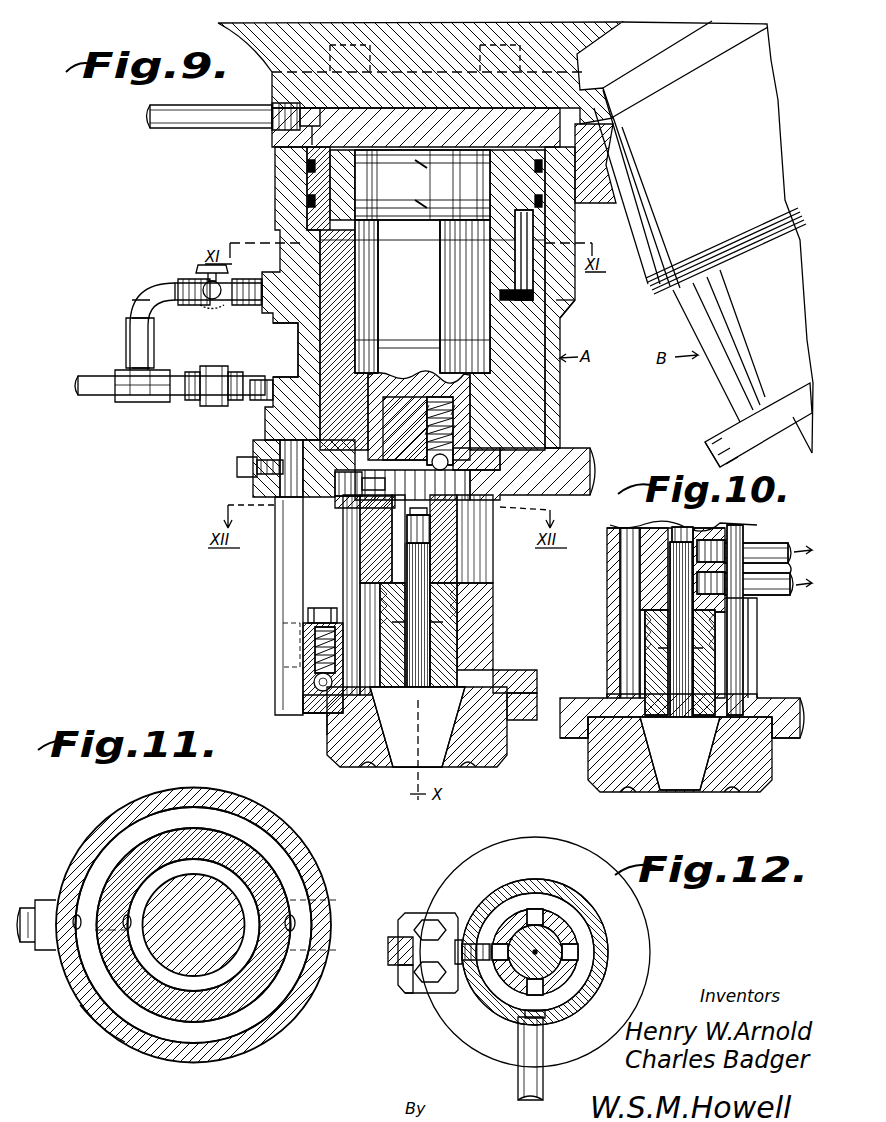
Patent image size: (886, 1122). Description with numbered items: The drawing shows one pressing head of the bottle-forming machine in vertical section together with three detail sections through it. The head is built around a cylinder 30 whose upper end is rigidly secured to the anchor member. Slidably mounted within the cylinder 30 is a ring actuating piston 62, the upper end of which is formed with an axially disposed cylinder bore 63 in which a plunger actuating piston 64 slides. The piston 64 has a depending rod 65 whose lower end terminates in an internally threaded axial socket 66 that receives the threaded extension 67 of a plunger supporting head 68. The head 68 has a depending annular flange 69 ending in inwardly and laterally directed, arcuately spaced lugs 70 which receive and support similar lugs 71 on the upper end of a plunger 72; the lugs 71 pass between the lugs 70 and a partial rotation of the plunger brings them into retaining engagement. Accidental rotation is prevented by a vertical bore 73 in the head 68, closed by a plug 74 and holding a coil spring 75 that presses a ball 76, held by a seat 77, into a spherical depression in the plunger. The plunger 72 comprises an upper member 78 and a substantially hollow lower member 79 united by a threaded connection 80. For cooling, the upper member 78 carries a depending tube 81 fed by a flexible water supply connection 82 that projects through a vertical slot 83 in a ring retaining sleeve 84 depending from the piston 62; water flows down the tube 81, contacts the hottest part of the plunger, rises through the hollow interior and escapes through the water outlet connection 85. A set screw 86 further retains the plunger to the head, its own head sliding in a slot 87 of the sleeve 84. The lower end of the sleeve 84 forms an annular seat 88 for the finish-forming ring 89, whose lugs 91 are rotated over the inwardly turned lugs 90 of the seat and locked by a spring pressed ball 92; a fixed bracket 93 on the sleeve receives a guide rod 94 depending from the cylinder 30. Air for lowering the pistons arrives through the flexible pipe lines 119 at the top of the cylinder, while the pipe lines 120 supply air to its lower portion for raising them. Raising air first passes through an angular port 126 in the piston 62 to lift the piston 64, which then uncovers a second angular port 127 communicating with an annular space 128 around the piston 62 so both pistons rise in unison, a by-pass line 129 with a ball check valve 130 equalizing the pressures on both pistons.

In FIG. 9, the cylinder 30 is at (276, 170).
In FIG. 11, the cylinder 30 is at (306, 857).
In FIG. 9, the flexible pipe lines 119 is at (222, 130).
In FIG. 9, the ring actuating piston 62 is at (307, 190).
In FIG. 11, the ring actuating piston 62 is at (296, 908).
In FIG. 9, the cylinder bore 63 is at (364, 280).
In FIG. 11, the cylinder bore 63 is at (250, 900).
In FIG. 9, the plunger actuating piston 64 is at (424, 192).
In FIG. 9, the depending rod 65 is at (412, 305).
In FIG. 11, the depending rod 65 is at (245, 944).
In FIG. 9, the internally threaded axial socket 66 is at (395, 395).
In FIG. 9, the threaded extension 67 is at (420, 410).
In FIG. 9, the plunger supporting head 68 is at (350, 492).
In FIG. 12, the plunger supporting head 68 is at (575, 918).
In FIG. 9, the depending annular flange 69 is at (365, 493).
In FIG. 12, the depending annular flange 69 is at (592, 938).
In FIG. 9, the lugs 70 is at (372, 505).
In FIG. 12, the lugs 70 is at (580, 950).
In FIG. 9, the lugs 71 is at (475, 484).
In FIG. 12, the lugs 71 is at (565, 965).
In FIG. 9, the plunger 72 is at (460, 562).
In FIG. 10, the plunger 72 is at (640, 578).
In FIG. 9, the vertical bore 73 is at (470, 446).
In FIG. 9, the plug 74 is at (450, 404).
In FIG. 9, the coil spring 75 is at (455, 420).
In FIG. 9, the ball 76 is at (490, 456).
In FIG. 9, the seat 77 is at (470, 503).
In FIG. 9, the upper member 78 is at (452, 540).
In FIG. 10, the upper member 78 is at (640, 560).
In FIG. 9, the lower member 79 is at (455, 640).
In FIG. 10, the lower member 79 is at (650, 680).
In FIG. 9, the threaded connection 80 is at (455, 606).
In FIG. 10, the threaded connection 80 is at (655, 632).
In FIG. 9, the depending tube 81 is at (425, 675).
In FIG. 10, the depending tube 81 is at (693, 663).
In FIG. 10, the flexible water supply connection 82 is at (770, 542).
In FIG. 12, the flexible water supply connection 82 is at (545, 1048).
In FIG. 10, the vertical slot 83 is at (752, 620).
In FIG. 12, the vertical slot 83 is at (572, 1000).
In FIG. 9, the ring retaining sleeve 84 is at (530, 680).
In FIG. 10, the ring retaining sleeve 84 is at (612, 614).
In FIG. 12, the ring retaining sleeve 84 is at (592, 978).
In FIG. 10, the water outlet connection 85 is at (780, 598).
In FIG. 9, the set screw 86 is at (312, 493).
In FIG. 12, the set screw 86 is at (455, 938).
In FIG. 9, the slot 87 is at (348, 571).
In FIG. 12, the slot 87 is at (452, 975).
In FIG. 9, the annular seat 88 is at (524, 721).
In FIG. 10, the annular seat 88 is at (580, 740).
In FIG. 9, the finish-forming ring 89 is at (335, 756).
In FIG. 10, the finish-forming ring 89 is at (598, 780).
In FIG. 9, the lugs 90 is at (316, 726).
In FIG. 10, the lugs 90 is at (778, 742).
In FIG. 9, the lugs 91 is at (306, 700).
In FIG. 10, the lugs 91 is at (772, 720).
In FIG. 9, the spring pressed ball 92 is at (314, 681).
In FIG. 9, the fixed bracket 93 is at (315, 648).
In FIG. 12, the fixed bracket 93 is at (405, 982).
In FIG. 9, the guide rod 94 is at (300, 610).
In FIG. 12, the guide rod 94 is at (395, 955).
In FIG. 9, the pipe lines 120 is at (98, 398).
In FIG. 9, the angular port 126 is at (300, 348).
In FIG. 9, the second angular port 127 is at (533, 268).
In FIG. 11, the second angular port 127 is at (295, 922).
In FIG. 9, the annular space 128 is at (562, 318).
In FIG. 9, the by-pass line 129 is at (140, 338).
In FIG. 11, the by-pass line 129 is at (24, 905).
In FIG. 9, the ball check valve 130 is at (210, 300).